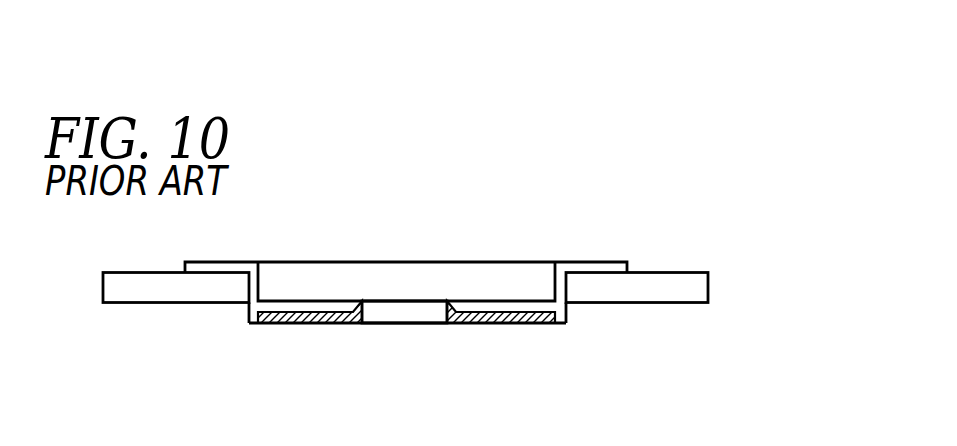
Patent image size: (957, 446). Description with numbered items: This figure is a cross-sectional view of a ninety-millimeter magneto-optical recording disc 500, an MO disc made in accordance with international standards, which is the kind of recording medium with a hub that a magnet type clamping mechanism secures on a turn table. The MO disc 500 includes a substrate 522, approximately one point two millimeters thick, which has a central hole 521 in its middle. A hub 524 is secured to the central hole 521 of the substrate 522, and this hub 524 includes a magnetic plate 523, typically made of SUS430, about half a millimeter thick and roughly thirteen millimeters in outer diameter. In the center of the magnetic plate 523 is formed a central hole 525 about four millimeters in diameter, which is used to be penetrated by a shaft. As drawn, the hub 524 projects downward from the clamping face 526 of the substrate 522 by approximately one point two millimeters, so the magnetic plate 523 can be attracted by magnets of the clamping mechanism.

The magneto-optical recording disc 500 is at (842, 428).
The central hole 521 is at (341, 231).
The substrate 522 is at (164, 292).
The magnetic plate 523 is at (510, 328).
The hub 524 is at (252, 317).
The central hole 525 is at (408, 317).
The clamping face 526 is at (658, 302).